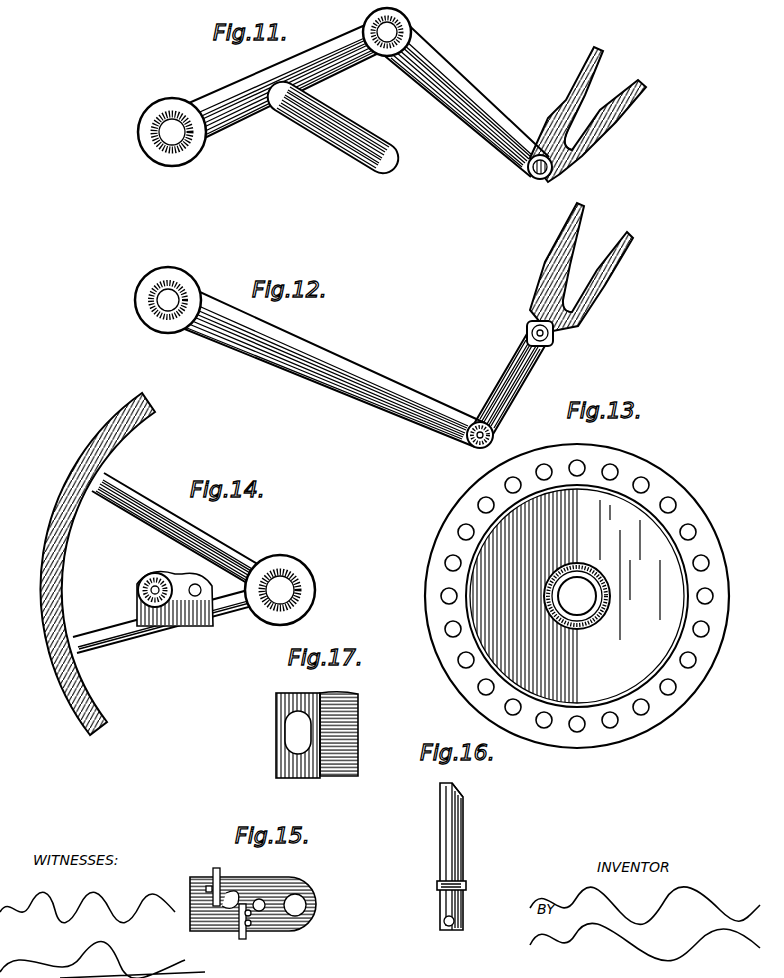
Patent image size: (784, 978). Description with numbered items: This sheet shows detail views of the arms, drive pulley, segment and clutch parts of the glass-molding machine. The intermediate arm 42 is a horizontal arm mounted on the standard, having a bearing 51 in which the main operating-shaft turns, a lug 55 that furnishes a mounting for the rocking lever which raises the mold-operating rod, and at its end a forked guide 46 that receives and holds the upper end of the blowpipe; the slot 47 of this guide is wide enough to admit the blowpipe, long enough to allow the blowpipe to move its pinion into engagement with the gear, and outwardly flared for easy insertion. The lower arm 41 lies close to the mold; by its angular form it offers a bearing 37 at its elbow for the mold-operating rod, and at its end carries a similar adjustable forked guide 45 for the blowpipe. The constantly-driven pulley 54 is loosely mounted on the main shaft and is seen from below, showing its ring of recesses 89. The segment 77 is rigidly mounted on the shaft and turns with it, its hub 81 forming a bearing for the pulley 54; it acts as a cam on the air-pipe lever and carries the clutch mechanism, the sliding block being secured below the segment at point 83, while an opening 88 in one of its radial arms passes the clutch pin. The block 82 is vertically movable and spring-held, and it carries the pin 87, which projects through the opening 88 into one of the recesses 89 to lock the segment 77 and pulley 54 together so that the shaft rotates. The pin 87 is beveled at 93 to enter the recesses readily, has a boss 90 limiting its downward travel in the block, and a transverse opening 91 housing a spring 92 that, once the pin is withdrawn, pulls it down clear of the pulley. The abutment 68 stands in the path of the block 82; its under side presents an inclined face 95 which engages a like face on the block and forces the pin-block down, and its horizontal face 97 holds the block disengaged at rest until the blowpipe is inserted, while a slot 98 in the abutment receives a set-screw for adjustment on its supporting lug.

In FIG. 11, the intermediate arm 42 is at (258, 148).
In FIG. 11, the bearing 51 is at (412, 28).
In FIG. 11, the lug 55 is at (336, 140).
In FIG. 11, the forked guide 46 is at (617, 104).
In FIG. 11, the slot 47 is at (568, 122).
In FIG. 12, the slot 47 is at (580, 301).
In FIG. 12, the lower arm 41 is at (366, 348).
In FIG. 12, the bearing 37 is at (473, 421).
In FIG. 12, the forked guide 45 is at (586, 213).
In FIG. 13, the pulley 54 is at (636, 651).
In FIG. 13, the recesses 89 is at (700, 634).
In FIG. 14, the segment 77 is at (44, 612).
In FIG. 14, the point 83 is at (175, 599).
In FIG. 14, the opening 88 is at (138, 591).
In FIG. 14, the hub 81 is at (294, 582).
In FIG. 17, the abutment 68 is at (298, 776).
In FIG. 17, the inclined face 95 is at (350, 733).
In FIG. 17, the horizontal face 97 is at (346, 777).
In FIG. 17, the slot 98 is at (290, 733).
In FIG. 15, the block 82 is at (290, 886).
In FIG. 15, the pin 87 is at (225, 921).
In FIG. 16, the pin 87 is at (463, 854).
In FIG. 15, the spring 92 is at (246, 931).
In FIG. 16, the bevel 93 is at (464, 792).
In FIG. 16, the boss 90 is at (466, 886).
In FIG. 16, the transverse opening 91 is at (455, 921).